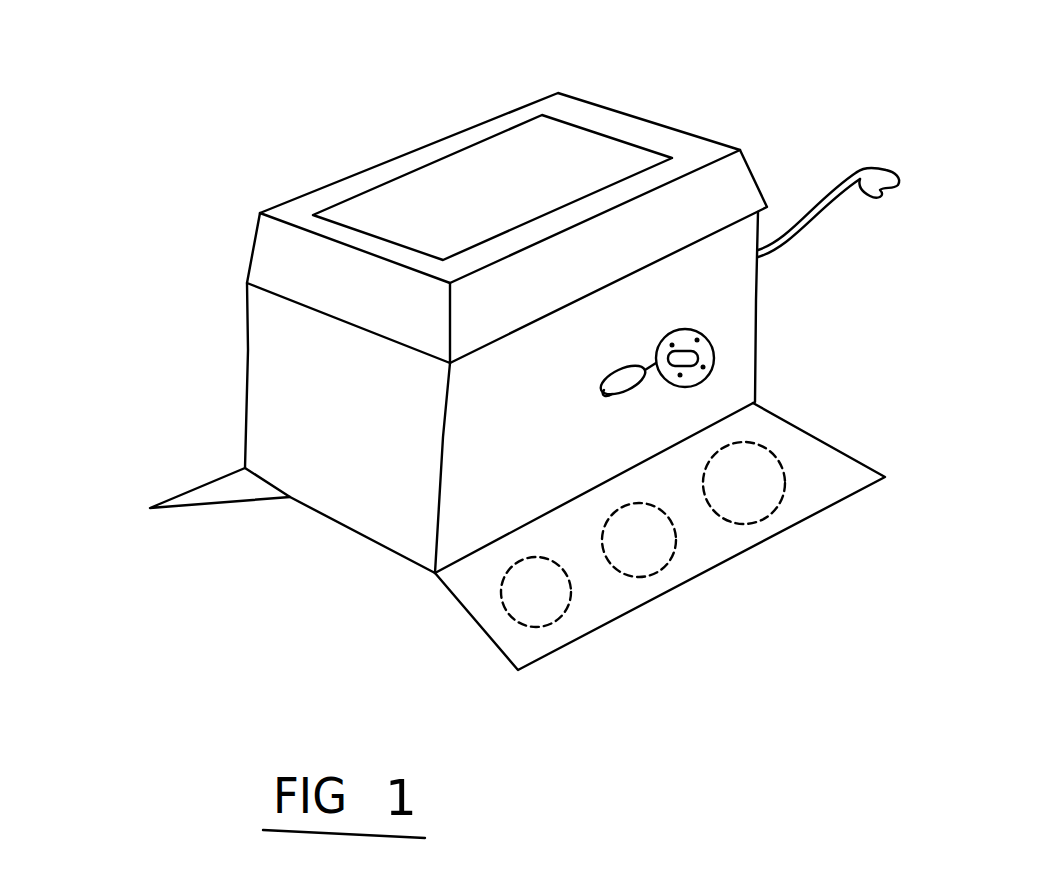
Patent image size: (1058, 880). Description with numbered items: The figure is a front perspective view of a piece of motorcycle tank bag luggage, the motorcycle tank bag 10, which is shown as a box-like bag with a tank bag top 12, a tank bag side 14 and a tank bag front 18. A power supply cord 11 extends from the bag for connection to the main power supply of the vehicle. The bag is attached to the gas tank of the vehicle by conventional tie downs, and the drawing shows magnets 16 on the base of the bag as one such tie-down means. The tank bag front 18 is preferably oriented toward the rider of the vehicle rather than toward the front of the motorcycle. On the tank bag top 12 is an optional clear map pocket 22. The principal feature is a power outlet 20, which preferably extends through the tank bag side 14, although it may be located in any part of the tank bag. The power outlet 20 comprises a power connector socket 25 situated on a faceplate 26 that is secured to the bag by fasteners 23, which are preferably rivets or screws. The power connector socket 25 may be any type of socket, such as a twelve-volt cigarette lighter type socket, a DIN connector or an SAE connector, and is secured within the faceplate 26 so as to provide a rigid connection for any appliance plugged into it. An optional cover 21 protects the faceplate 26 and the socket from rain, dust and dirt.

The motorcycle tank bag 10 is at (251, 170).
The power supply cord 11 is at (872, 170).
The tank bag top 12 is at (615, 132).
The tank bag side 14 is at (730, 285).
The magnets 16 is at (770, 457).
The tank bag front 18 is at (278, 372).
The power outlet 20 is at (746, 343).
The cover 21 is at (623, 382).
The clear map pocket 22 is at (483, 180).
The fasteners 23 is at (670, 340).
The power connector socket 25 is at (683, 353).
The faceplate 26 is at (697, 390).